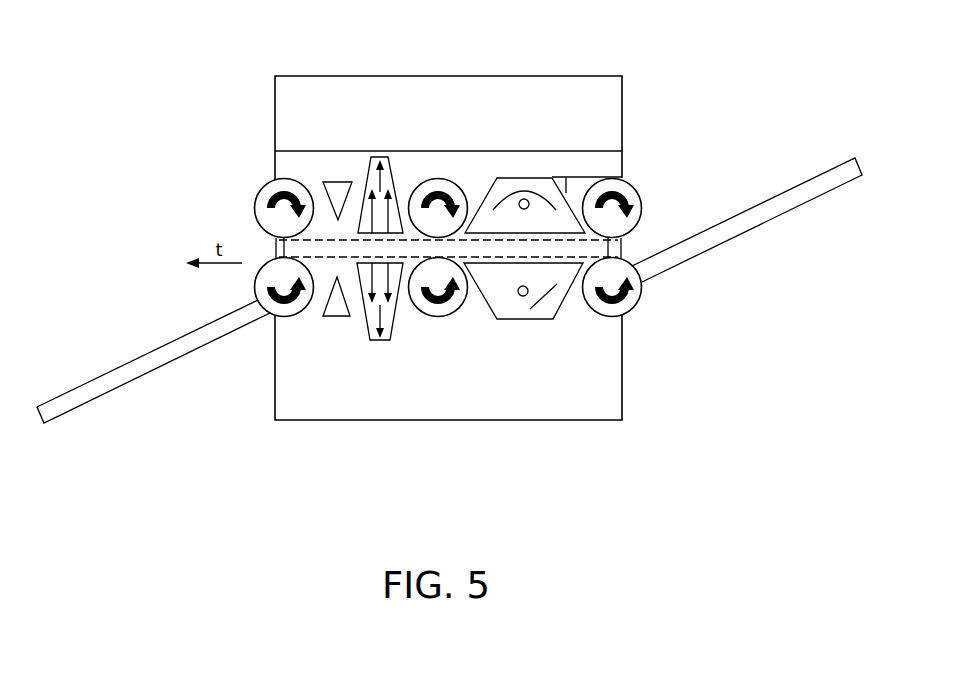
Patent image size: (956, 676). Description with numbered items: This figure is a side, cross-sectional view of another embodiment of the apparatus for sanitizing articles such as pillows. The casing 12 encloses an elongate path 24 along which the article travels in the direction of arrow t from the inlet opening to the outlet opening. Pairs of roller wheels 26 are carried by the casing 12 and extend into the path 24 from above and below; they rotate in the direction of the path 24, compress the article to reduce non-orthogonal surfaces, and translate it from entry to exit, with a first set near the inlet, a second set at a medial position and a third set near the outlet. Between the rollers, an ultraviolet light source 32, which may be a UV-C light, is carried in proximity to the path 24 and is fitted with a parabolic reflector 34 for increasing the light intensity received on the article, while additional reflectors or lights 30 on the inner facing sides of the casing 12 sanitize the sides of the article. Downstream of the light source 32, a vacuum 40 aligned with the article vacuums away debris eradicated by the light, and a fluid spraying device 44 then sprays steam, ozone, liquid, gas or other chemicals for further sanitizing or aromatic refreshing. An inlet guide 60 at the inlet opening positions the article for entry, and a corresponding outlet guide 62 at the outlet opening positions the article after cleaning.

The casing 12 is at (545, 83).
The elongate path 24 is at (622, 248).
The roller wheel 26 is at (439, 179).
The reflectors or lights 30 is at (275, 242).
The ultraviolet light source 32 is at (534, 190).
The parabolic reflector 34 is at (527, 198).
The vacuum 40 is at (364, 168).
The fluid spraying device 44 is at (338, 182).
The inlet guide 60 is at (817, 185).
The outgoing strip 62 is at (105, 385).